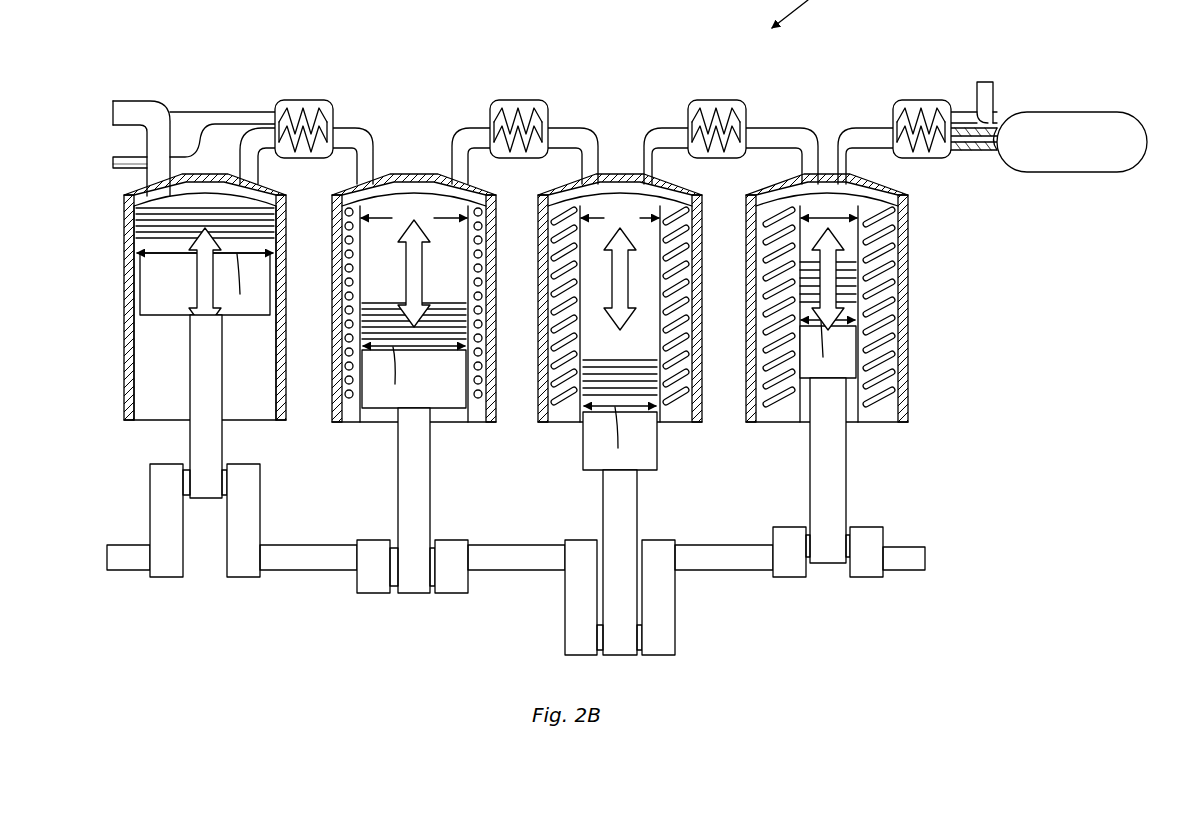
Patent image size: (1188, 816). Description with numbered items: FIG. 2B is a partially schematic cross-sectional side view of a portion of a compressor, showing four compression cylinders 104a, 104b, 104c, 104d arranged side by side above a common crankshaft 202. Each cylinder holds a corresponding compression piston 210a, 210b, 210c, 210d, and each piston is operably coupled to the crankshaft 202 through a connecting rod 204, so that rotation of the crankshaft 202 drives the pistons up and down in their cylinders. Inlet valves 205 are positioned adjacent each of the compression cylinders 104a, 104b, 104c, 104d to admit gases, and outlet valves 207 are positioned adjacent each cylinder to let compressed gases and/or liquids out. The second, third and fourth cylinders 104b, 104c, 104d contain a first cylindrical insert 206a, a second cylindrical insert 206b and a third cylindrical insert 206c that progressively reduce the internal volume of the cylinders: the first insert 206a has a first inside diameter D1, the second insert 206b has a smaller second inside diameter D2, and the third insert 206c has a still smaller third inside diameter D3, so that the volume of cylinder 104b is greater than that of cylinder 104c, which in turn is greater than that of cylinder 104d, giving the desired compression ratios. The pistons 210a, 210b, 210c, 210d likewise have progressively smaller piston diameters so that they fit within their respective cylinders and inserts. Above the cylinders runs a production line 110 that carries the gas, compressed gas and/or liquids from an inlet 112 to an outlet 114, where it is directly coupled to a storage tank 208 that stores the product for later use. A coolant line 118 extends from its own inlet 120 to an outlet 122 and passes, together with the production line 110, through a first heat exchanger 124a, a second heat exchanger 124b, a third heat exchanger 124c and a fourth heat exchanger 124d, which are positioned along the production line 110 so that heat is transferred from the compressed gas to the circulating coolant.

The production line 110 is at (128, 102).
The inlet 112 is at (113, 102).
The coolant line 118 is at (120, 157).
The outlet 122 is at (112, 168).
The inlet 120 is at (985, 82).
The first heat exchanger 124a is at (288, 100).
The second heat exchanger 124b is at (503, 100).
The third heat exchanger 124c is at (703, 100).
The fourth heat exchanger 124d is at (898, 100).
The outlet 114 is at (1003, 130).
The storage tank 208 is at (1078, 172).
The outlet valve 207 is at (268, 200).
The inlet valve 205 is at (150, 208).
The first cylindrical insert 206a is at (345, 322).
The second cylindrical insert 206b is at (600, 192).
The third cylindrical insert 206c is at (900, 234).
The compression cylinder 104a is at (128, 420).
The compression cylinder 104b is at (345, 422).
The compression cylinder 104c is at (551, 422).
The compression cylinder 104d is at (759, 422).
The first compression piston 210a is at (160, 298).
The second compression piston 210b is at (440, 380).
The third compression piston 210c is at (646, 430).
The fourth compression piston 210d is at (844, 343).
The connecting rod 204 is at (210, 458).
The crankshaft 202 is at (905, 578).
The first inside diameter D1 is at (414, 219).
The second inside diameter D2 is at (620, 219).
The third inside diameter D3 is at (829, 216).